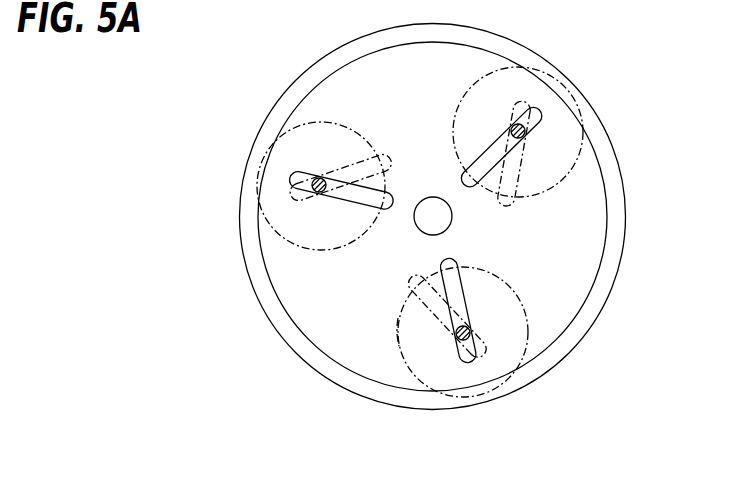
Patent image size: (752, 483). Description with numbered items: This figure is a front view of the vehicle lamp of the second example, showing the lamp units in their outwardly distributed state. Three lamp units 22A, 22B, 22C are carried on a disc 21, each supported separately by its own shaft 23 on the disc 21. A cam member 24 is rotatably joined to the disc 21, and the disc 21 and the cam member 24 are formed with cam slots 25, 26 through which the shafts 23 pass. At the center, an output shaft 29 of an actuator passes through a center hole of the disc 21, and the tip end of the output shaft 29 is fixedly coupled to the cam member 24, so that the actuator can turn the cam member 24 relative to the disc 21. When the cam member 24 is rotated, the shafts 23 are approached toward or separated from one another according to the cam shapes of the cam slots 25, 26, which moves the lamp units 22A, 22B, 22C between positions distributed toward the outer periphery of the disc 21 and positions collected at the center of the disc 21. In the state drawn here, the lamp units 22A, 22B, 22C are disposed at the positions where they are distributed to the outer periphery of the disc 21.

The disc 21 is at (245, 235).
The cam member 24 is at (597, 228).
The output shaft 29 is at (438, 197).
The lamp unit 22A is at (358, 130).
The lamp unit 22B is at (438, 360).
The lamp unit 22C is at (546, 193).
The shaft 23 is at (476, 321).
The cam slot 25 is at (398, 345).
The cam slot 26 is at (470, 364).